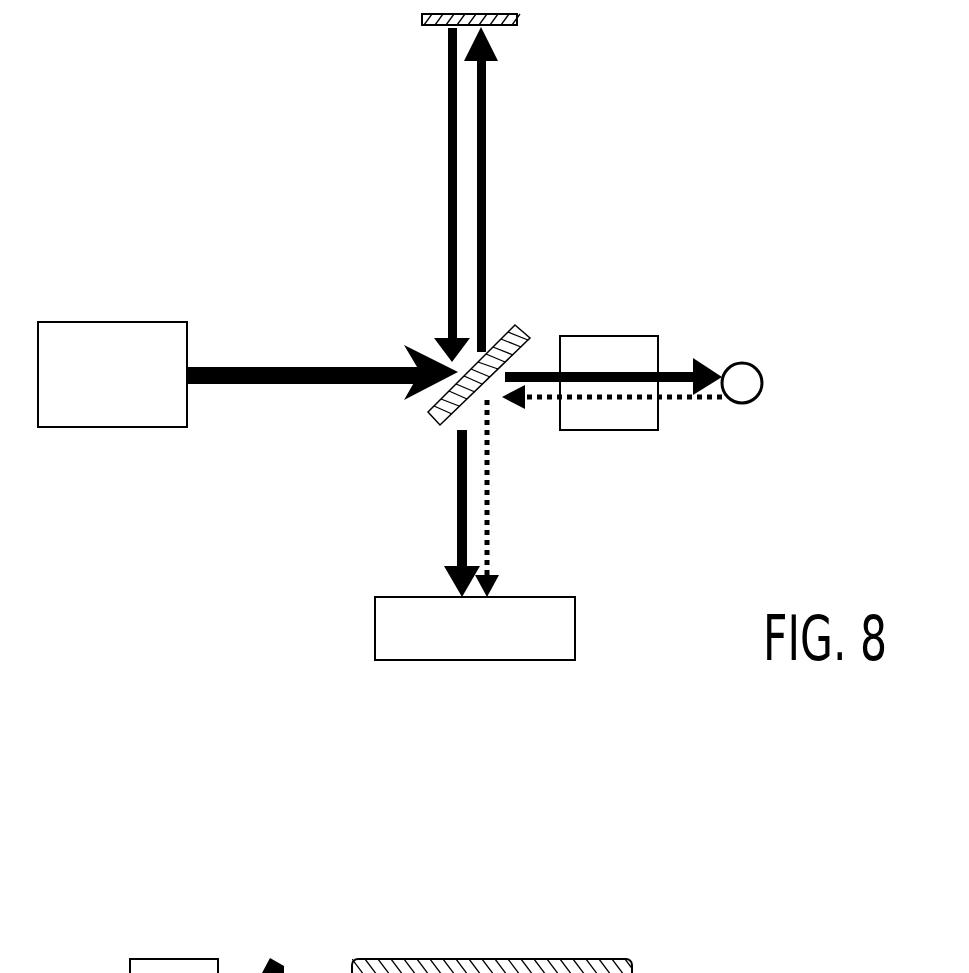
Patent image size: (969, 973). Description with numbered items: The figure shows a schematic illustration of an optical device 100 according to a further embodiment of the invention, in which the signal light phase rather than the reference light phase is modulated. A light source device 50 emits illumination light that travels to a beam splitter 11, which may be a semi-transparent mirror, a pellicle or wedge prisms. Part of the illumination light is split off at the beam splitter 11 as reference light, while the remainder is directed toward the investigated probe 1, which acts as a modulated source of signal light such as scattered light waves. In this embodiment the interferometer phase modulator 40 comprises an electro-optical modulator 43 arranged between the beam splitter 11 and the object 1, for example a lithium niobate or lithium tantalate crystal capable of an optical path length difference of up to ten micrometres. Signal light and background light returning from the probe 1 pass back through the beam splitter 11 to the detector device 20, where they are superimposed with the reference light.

The optical device 100 is at (242, 223).
The light source device 50 is at (138, 407).
The beam splitter 11 is at (440, 420).
The electro-optical modulator 43 is at (623, 342).
The interferometer phase modulator 40 is at (682, 318).
The probe 1 is at (755, 403).
The detector device 20 is at (536, 647).